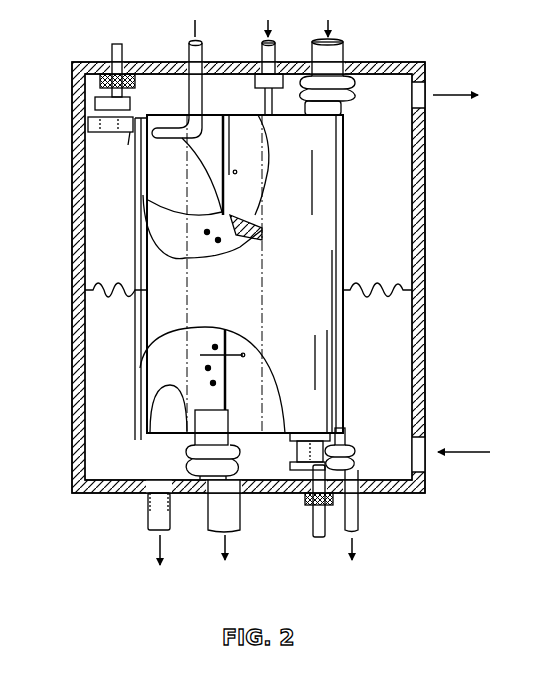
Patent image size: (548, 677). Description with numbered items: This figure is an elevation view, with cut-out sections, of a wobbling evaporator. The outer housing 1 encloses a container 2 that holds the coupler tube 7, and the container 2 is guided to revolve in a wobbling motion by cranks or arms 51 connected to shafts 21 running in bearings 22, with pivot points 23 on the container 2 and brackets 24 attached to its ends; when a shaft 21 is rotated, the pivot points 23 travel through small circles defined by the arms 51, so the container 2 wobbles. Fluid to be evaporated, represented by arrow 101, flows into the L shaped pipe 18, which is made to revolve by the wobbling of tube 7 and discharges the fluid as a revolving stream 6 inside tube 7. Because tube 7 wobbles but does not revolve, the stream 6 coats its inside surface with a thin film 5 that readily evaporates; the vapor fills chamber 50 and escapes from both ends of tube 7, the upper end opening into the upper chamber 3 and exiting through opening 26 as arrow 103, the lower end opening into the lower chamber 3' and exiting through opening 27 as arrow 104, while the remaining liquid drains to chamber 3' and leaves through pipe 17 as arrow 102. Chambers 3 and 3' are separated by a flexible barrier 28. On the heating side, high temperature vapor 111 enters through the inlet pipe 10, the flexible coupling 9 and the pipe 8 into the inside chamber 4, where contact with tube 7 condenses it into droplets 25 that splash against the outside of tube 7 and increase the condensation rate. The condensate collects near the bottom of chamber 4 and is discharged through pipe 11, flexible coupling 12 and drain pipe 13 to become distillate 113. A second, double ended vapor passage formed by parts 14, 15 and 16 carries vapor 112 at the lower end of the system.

The housing 1 is at (425, 215).
The container 2 is at (344, 205).
The upper chamber 3 is at (375, 145).
The lower chamber 3' is at (244, 397).
The inside chamber 4 is at (205, 165).
The thin film 5 is at (220, 207).
The fluid stream 6 is at (146, 155).
The tube 7 is at (212, 274).
The pipe 8 is at (341, 108).
The flexible coupling 9 is at (352, 84).
The inlet pipe 10 is at (344, 50).
The pipe 11 is at (346, 437).
The flexible coupling 12 is at (356, 455).
The drain pipe 13 is at (359, 505).
The vapor passage pipe 14 is at (194, 440).
The vapor passage coupling 15 is at (187, 462).
The vapor passage pipe 16 is at (207, 515).
The pipe 17 is at (147, 515).
The L shaped pipe 18 is at (203, 50).
The shaft 21 is at (123, 49).
The bearing 22 is at (136, 82).
The pivot point 23 is at (104, 133).
The bracket 24 is at (128, 145).
The droplets 25 is at (235, 172).
The opening 26 is at (418, 92).
The opening 27 is at (418, 446).
The flexible barrier 28 is at (104, 283).
The chamber 50 is at (182, 178).
The crank arm 51 is at (131, 103).
The fluid to be evaporated 101 is at (234, 59).
The outflow arrow 102 is at (160, 561).
The vapor exit arrow 103 is at (455, 105).
The vapor exit arrow 104 is at (464, 462).
The high temperature vapor 111 is at (332, 20).
The vapor 112 is at (224, 558).
The distillate 113 is at (351, 560).